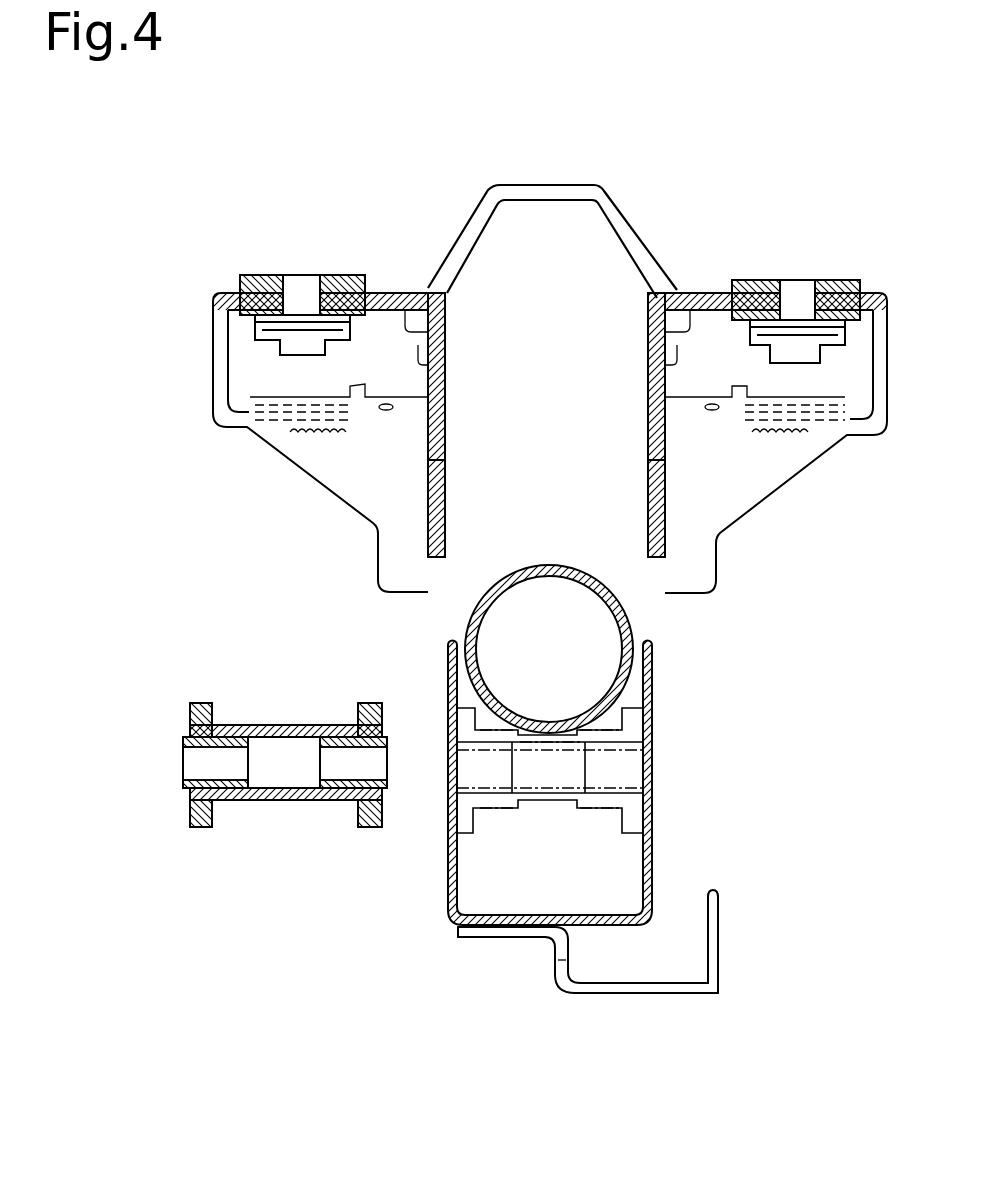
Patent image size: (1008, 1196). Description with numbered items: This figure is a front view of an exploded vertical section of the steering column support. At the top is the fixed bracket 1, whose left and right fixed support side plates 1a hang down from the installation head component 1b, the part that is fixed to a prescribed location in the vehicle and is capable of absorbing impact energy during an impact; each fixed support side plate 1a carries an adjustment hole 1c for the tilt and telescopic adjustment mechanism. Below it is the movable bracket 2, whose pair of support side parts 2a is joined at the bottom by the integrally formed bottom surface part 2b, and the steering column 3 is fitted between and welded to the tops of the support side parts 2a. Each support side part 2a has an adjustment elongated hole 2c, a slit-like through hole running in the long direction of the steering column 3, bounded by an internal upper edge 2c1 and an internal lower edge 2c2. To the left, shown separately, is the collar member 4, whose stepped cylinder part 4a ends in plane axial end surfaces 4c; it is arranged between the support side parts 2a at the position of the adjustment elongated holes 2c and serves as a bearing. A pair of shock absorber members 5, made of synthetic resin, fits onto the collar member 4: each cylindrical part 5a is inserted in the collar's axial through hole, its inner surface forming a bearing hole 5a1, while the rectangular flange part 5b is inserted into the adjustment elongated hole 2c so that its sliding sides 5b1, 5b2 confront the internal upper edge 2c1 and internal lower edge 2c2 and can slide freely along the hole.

The fixed bracket 1 is at (652, 231).
The fixed support side plate 1a is at (427, 438).
The installation head component 1b is at (558, 193).
The adjustment hole 1c is at (427, 477).
The movable bracket 2 is at (657, 688).
The support side part 2a is at (448, 890).
The bottom surface part 2b is at (600, 927).
The adjustment elongated hole 2c is at (447, 762).
The internal upper edge 2c1 is at (650, 760).
The internal lower edge 2c2 is at (650, 789).
The steering column 3 is at (573, 566).
The collar member 4 is at (331, 721).
The cylinder part 4a is at (235, 727).
The axial end surface 4c is at (195, 715).
The shock absorber member 5 is at (170, 767).
The cylindrical part 5a is at (222, 800).
The bearing hole 5a1 is at (235, 760).
The flange part 5b is at (183, 742).
The sliding side 5b1 is at (185, 740).
The sliding side 5b2 is at (190, 800).